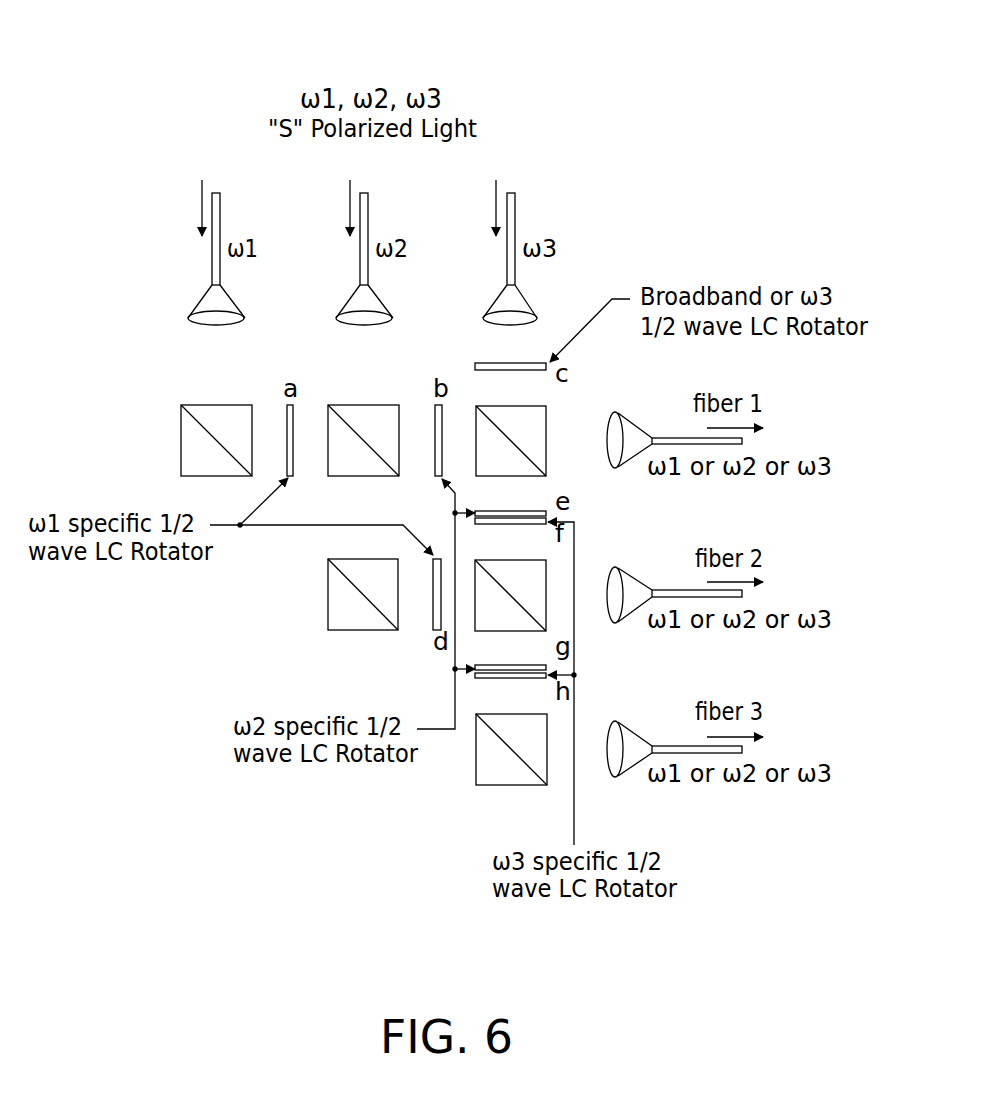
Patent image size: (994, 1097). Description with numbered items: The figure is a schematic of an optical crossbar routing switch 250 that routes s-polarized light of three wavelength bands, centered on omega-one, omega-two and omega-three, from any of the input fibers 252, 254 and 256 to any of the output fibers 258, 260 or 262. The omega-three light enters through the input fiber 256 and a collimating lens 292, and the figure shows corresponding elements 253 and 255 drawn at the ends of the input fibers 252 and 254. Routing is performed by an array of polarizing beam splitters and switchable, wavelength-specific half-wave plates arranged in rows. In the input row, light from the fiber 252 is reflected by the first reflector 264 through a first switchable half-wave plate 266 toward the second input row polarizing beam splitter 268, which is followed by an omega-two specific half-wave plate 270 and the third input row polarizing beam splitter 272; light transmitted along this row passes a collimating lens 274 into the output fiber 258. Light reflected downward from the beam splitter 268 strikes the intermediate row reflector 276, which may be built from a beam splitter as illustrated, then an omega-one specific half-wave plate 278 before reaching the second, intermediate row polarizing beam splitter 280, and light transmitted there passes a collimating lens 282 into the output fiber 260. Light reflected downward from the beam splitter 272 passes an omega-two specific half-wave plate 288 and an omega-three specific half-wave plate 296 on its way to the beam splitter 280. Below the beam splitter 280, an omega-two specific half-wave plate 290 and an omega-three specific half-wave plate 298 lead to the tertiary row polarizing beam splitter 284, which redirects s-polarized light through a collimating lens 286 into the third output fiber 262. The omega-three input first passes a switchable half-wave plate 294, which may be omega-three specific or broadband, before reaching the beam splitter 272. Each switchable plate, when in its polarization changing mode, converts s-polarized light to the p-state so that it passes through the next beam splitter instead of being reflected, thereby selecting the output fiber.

The optical crossbar routing switch 250 is at (157, 72).
The input fiber 252 is at (220, 201).
The input fiber 254 is at (368, 201).
The input fiber 256 is at (515, 201).
The collimator for omega1 253 is at (205, 323).
The collimator for omega2 255 is at (353, 323).
The collimating lens 292 is at (500, 324).
The first reflector 264 is at (194, 403).
The second input row polarizing beam splitter 268 is at (341, 403).
The third input row polarizing beam splitter 272 is at (548, 478).
The intermediate row reflector 276 is at (345, 632).
The second intermediate row polarizing beam splitter 280 is at (548, 633).
The tertiary row polarizing beam splitter 284 is at (490, 787).
The first switchable wavelength specific half-wave plate 266 is at (286, 410).
The omega-two wavelength specific half-wave plate 270 is at (434, 410).
The omega-one wavelength specific half-wave plate 278 is at (433, 632).
The switchable half-wave plate 294 is at (523, 372).
The omega-two wavelength specific half-wave plate 288 is at (487, 510).
The omega-three wavelength specific half-wave plate 296 is at (522, 526).
The omega-two wavelength specific half-wave plate 290 is at (487, 664).
The omega-three wavelength specific half-wave plate 298 is at (522, 680).
The collimating lens 274 is at (612, 432).
The collimating lens 282 is at (612, 587).
The collimating lens 286 is at (612, 742).
The output fiber 258 is at (678, 438).
The output fiber 260 is at (677, 590).
The output fiber 262 is at (677, 746).